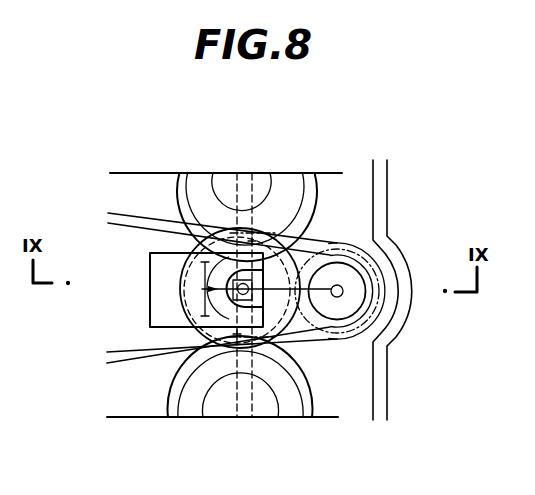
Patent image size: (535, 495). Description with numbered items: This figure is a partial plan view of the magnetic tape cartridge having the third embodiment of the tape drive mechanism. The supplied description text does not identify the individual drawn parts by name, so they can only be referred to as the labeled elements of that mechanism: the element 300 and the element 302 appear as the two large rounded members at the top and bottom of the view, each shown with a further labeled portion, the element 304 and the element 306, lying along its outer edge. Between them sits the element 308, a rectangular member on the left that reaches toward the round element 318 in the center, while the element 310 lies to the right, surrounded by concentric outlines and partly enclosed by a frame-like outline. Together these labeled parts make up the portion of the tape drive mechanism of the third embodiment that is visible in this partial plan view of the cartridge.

The lower roller 300 is at (193, 408).
The upper roller 302 is at (289, 180).
The lower roller outer surface 304 is at (175, 408).
The upper roller outer surface 306 is at (180, 178).
The sensor block 308 is at (175, 305).
The pulley 310 is at (334, 270).
The wheel 318 is at (272, 268).